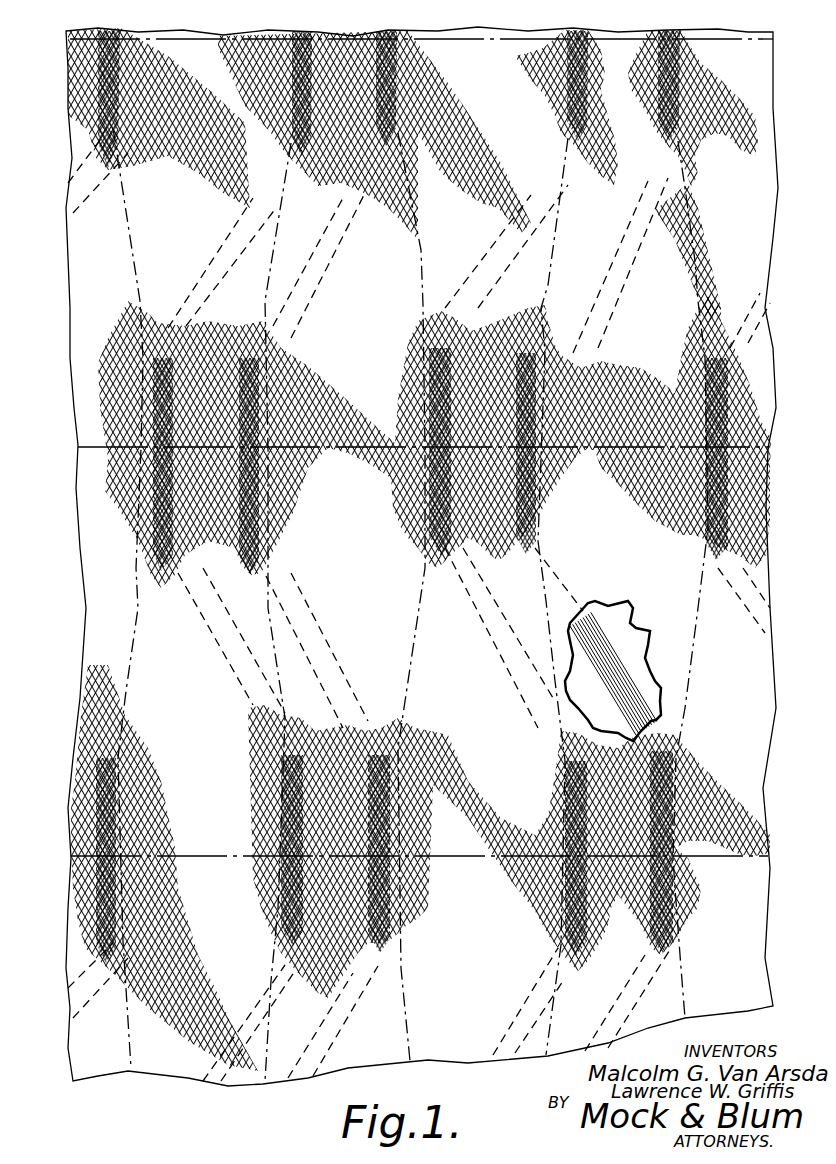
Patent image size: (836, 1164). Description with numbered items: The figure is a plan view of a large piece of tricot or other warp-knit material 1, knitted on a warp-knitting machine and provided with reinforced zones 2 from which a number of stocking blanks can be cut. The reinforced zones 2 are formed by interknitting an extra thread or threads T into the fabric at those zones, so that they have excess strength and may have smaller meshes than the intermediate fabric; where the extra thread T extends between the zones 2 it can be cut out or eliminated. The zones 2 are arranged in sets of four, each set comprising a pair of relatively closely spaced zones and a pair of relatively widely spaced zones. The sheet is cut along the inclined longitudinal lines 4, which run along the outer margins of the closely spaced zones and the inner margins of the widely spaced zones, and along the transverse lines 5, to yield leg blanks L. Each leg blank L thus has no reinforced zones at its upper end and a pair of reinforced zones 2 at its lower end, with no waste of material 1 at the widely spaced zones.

The warp-knit material 1 is at (740, 668).
The reinforced zones 2 is at (287, 107).
The inclined longitudinal cutting lines 4 is at (123, 220).
The cutting lines 5 is at (68, 32).
The leg blank L is at (653, 297).
The extra thread T is at (593, 650).